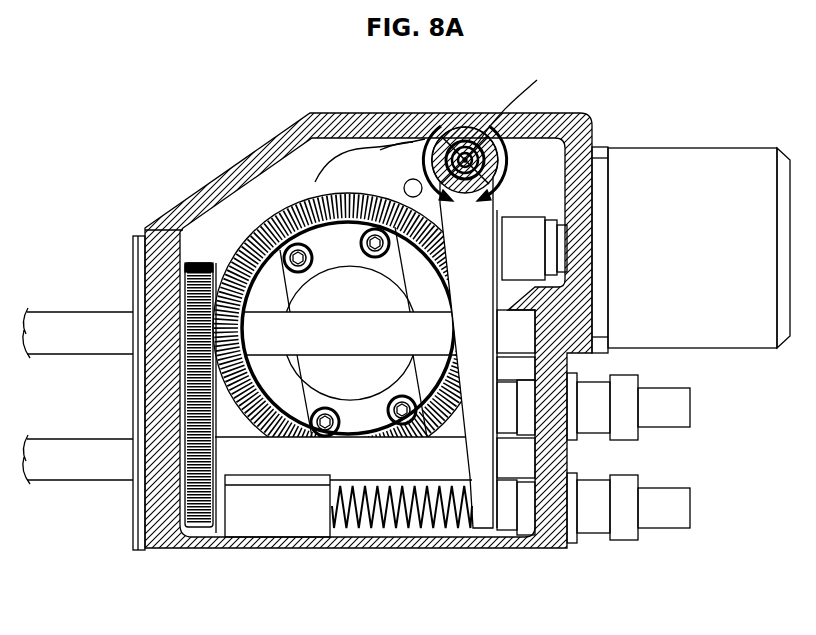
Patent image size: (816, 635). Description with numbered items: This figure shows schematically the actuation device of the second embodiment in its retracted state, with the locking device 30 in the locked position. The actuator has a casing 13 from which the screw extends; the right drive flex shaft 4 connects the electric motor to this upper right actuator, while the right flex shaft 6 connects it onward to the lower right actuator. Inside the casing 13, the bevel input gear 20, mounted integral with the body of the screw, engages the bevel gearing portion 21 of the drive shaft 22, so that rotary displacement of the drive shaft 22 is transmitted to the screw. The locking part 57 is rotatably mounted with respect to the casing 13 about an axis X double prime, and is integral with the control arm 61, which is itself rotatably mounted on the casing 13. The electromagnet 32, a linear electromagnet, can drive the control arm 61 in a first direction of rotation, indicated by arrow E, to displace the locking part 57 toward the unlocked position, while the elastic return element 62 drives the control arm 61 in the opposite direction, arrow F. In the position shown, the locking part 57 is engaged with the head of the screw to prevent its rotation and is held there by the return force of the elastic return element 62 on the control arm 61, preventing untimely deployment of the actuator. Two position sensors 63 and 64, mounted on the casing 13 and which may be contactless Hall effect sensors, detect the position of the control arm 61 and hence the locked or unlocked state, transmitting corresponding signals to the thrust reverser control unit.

The right drive flex shaft 4 is at (80, 328).
The right flex shaft 6 is at (80, 456).
The casing 13 is at (397, 127).
The bevel input gear 20 is at (279, 216).
The bevel gearing portion 21 is at (232, 308).
The drive shaft 22 is at (335, 325).
The locking device 30 is at (498, 568).
The electromagnet 32 is at (686, 168).
The locking part 57 is at (355, 176).
The control arm 61 is at (478, 296).
The elastic return element 62 is at (398, 526).
The position sensor 63 is at (680, 406).
The position sensor 64 is at (680, 506).